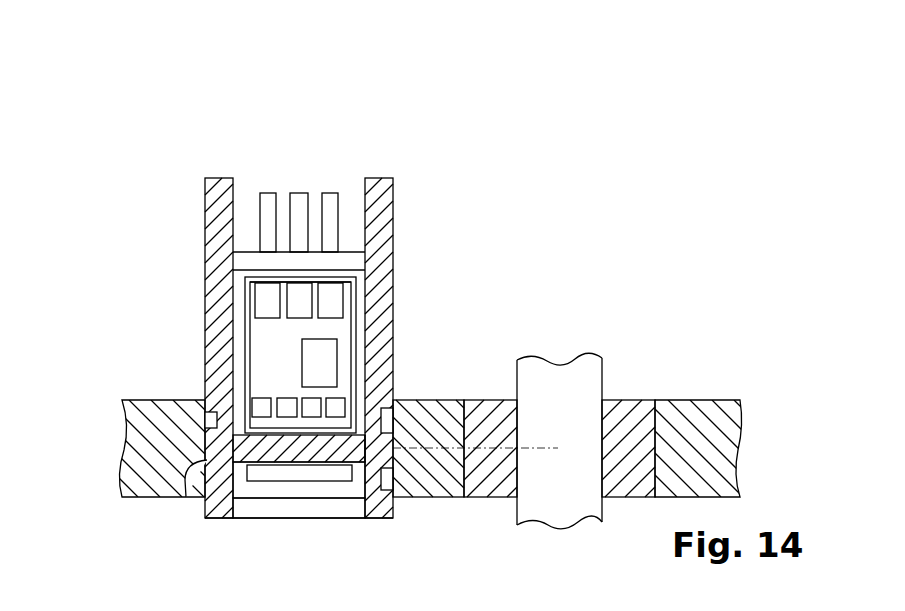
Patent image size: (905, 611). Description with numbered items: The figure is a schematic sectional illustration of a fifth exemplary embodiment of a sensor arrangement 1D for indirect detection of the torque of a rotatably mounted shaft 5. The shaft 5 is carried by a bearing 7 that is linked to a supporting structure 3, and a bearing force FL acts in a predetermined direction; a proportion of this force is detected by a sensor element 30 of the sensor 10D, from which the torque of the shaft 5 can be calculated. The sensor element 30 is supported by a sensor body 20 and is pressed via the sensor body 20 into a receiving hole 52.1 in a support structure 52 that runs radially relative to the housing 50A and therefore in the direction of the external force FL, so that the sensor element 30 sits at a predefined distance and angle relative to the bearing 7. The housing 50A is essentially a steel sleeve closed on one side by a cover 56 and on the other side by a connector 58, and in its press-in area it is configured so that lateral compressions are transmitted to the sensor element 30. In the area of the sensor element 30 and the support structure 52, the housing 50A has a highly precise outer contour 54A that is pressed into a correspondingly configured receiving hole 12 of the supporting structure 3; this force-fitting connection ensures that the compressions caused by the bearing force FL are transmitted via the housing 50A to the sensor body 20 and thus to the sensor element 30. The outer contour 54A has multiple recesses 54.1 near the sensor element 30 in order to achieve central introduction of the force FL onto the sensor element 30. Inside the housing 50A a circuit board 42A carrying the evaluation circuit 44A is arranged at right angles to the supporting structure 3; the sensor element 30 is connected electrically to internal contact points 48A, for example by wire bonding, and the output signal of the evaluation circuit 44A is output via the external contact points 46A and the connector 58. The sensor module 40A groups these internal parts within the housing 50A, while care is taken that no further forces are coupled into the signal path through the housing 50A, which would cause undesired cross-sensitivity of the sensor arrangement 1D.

The sensor 10D is at (252, 126).
The connector 58 is at (348, 168).
The sensor arrangement 1D is at (694, 215).
The housing 50A is at (383, 231).
The sensor module 40A is at (364, 277).
The external contact points 46A is at (340, 299).
The circuit board 42A is at (343, 327).
The evaluation circuit 44A is at (325, 352).
The sensor element 30 is at (309, 445).
The internal contact points 48A is at (259, 405).
The recesses 54.1 is at (207, 417).
The outer contour 54A is at (185, 493).
The receiving hole 12 is at (222, 506).
The cover 56 is at (267, 508).
The receiving hole 52.1 is at (318, 467).
The sensor body 20 is at (335, 473).
The support structure 52 is at (356, 452).
The bearing force FL is at (499, 445).
The shaft 5 is at (558, 375).
The bearing 7 is at (625, 410).
The supporting structure 3 is at (700, 410).